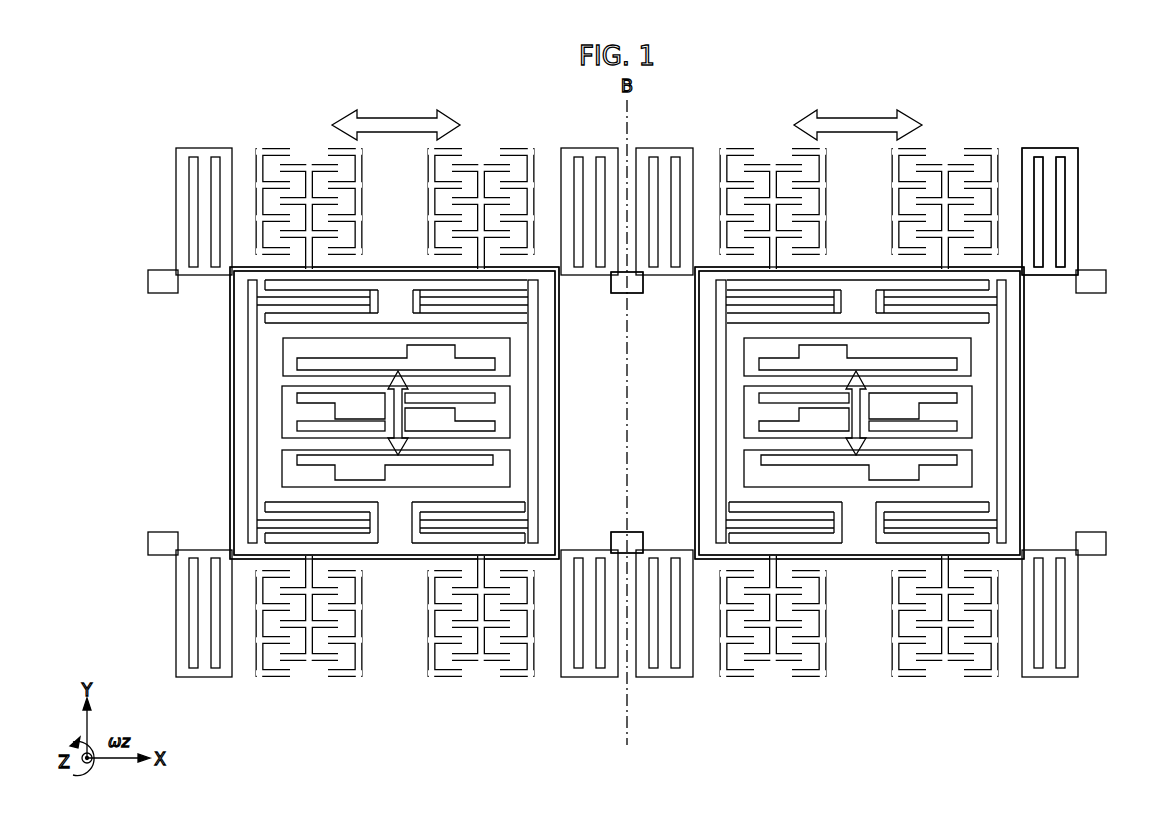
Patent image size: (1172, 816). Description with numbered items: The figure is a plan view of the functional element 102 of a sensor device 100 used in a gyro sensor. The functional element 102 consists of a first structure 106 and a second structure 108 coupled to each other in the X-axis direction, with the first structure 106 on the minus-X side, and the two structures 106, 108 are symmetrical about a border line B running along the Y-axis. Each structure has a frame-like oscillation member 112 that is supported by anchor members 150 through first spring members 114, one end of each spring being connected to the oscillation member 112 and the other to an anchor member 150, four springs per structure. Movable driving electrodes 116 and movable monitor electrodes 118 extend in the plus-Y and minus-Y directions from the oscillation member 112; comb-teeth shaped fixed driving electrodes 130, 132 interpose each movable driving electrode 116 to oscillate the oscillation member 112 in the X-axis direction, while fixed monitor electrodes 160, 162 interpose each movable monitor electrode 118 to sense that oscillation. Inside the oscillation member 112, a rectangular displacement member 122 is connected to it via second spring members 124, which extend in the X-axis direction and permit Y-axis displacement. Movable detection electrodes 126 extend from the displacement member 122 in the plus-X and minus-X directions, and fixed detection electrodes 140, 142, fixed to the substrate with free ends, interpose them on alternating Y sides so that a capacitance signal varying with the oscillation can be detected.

The sensor device 100 is at (1078, 92).
The functional element 102 is at (1078, 130).
The first structure 106 is at (150, 727).
The second structure 108 is at (1120, 727).
The oscillation member 112 is at (230, 325).
The first spring member 114 is at (176, 214).
The movable driving electrode 116 is at (481, 164).
The movable monitor electrode 118 is at (309, 164).
The displacement member 122 is at (252, 400).
The second spring member 124 is at (262, 297).
The movable detection electrode 126 is at (300, 377).
The fixed driving electrode 130 is at (430, 206).
The fixed driving electrode 132 is at (527, 150).
The fixed detection electrode 140 is at (300, 458).
The fixed detection electrode 142 is at (495, 365).
The anchor member 150 is at (150, 280).
The fixed monitor electrode 160 is at (265, 148).
The fixed monitor electrode 162 is at (361, 190).